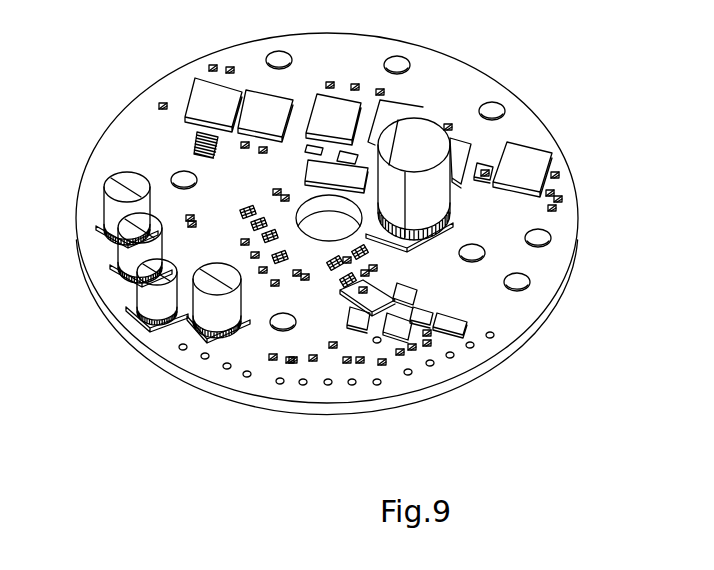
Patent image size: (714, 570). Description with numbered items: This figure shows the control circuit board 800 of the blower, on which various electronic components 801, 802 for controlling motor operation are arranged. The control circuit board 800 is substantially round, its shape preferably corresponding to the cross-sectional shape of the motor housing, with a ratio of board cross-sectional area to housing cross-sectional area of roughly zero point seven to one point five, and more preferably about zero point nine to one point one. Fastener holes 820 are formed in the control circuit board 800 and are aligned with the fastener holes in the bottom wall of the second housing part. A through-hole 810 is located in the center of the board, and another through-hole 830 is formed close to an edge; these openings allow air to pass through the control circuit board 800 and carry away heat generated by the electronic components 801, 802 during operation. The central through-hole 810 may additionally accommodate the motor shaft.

The control circuit board 800 is at (138, 119).
The electronic component 801 is at (533, 160).
The electronic component 802 is at (150, 293).
The through-hole 810 is at (336, 222).
The fastener holes 820 is at (174, 176).
The through-hole 830 is at (493, 103).